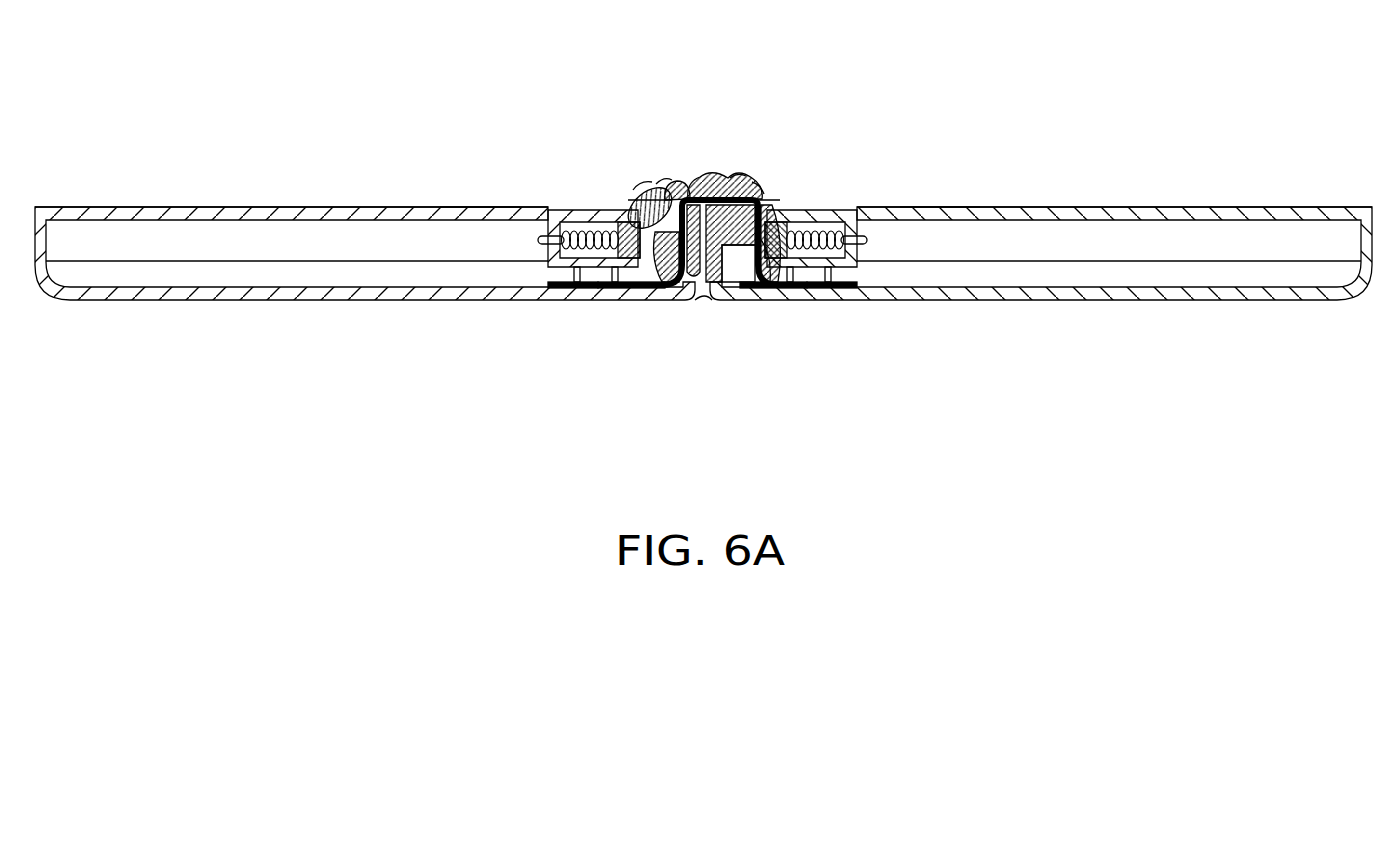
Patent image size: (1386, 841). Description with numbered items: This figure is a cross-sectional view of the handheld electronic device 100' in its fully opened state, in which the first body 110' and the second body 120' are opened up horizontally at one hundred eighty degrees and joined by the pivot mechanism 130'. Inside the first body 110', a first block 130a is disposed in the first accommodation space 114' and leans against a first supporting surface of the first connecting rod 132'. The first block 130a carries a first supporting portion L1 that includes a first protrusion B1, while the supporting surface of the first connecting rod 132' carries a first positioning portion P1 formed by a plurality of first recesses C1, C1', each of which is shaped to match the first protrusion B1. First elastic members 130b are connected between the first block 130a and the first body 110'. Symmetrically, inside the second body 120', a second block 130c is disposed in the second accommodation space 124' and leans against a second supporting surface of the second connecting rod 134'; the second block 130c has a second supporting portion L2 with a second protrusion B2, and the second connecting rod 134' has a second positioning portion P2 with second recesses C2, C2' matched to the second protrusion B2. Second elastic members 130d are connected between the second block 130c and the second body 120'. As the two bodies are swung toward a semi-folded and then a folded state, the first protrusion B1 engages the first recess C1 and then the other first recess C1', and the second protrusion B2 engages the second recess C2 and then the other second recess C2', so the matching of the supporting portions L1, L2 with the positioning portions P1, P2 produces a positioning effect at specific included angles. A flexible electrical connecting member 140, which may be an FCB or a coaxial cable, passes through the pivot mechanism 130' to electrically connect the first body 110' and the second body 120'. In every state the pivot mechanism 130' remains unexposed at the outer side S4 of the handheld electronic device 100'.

The handheld electronic device 100' is at (703, 300).
The first body 110' is at (1041, 200).
The second body 120' is at (365, 200).
The pivot mechanism 130' is at (714, 153).
The first block 130a is at (797, 200).
The first elastic members 130b is at (930, 209).
The second block 130c is at (630, 202).
The second elastic members 130d is at (477, 217).
The first accommodation space 114' is at (841, 201).
The second accommodation space 124' is at (560, 198).
The first connecting rod 132' is at (761, 309).
The second connecting rod 134' is at (650, 304).
The flexible electrical connecting member 140 is at (690, 289).
The first positioning portion P1 is at (833, 90).
The second positioning portion P2 is at (660, 92).
The first recess C1 is at (788, 146).
The first recess C1' is at (756, 136).
The second recess C2 is at (616, 146).
The second recess C2' is at (648, 141).
The first supporting portion L1 is at (827, 287).
The second supporting portion L2 is at (578, 288).
The first protrusion B1 is at (783, 287).
The second protrusion B2 is at (623, 287).
The outer side S4 is at (703, 322).